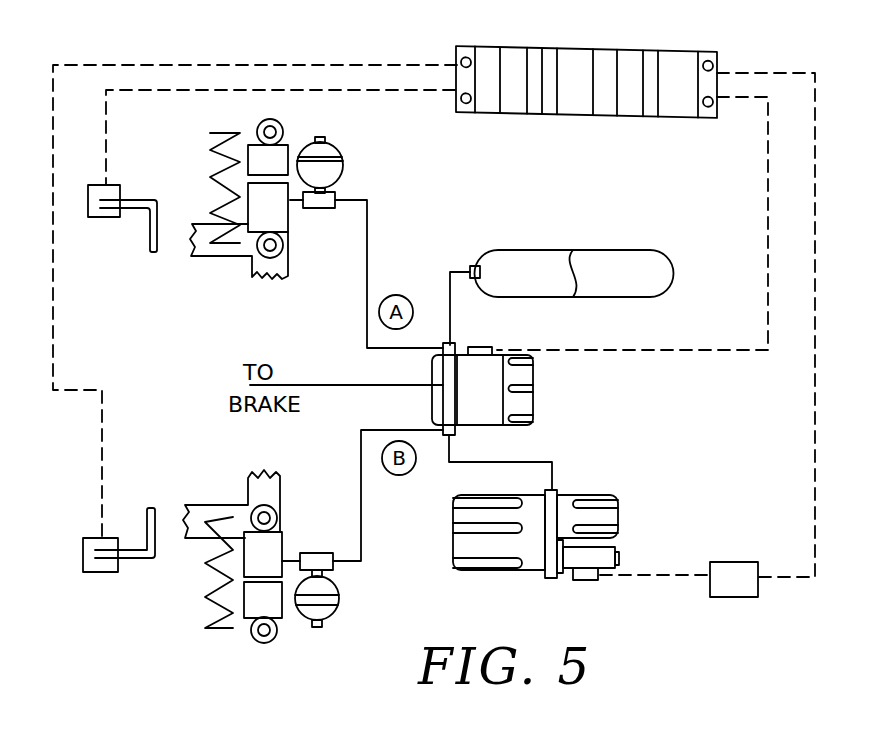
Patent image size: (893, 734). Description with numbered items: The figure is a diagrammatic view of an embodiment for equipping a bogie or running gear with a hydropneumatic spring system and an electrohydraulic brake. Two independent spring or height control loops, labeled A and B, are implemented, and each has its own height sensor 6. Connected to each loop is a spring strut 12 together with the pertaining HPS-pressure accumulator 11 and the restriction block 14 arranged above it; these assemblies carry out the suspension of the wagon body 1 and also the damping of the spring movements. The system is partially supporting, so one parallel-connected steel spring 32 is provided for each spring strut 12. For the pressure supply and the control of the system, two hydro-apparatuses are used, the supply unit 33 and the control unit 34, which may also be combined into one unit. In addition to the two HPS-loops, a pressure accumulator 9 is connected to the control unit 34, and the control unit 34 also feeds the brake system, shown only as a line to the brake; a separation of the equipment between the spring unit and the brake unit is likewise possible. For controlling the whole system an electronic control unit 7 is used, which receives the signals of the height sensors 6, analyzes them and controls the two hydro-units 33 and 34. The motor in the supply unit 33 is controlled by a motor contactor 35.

The wagon body 1 is at (204, 244).
The height sensor 6 is at (102, 214).
The electronic control unit 7 is at (578, 58).
The pressure accumulator 9 is at (550, 264).
The HPS-pressure accumulator 11 is at (333, 175).
The spring strut 12 is at (277, 158).
The restriction block 14 is at (320, 200).
The steel spring 32 is at (222, 172).
The supply unit 33 is at (607, 518).
The control unit 34 is at (525, 373).
The motor contactor 35 is at (735, 585).